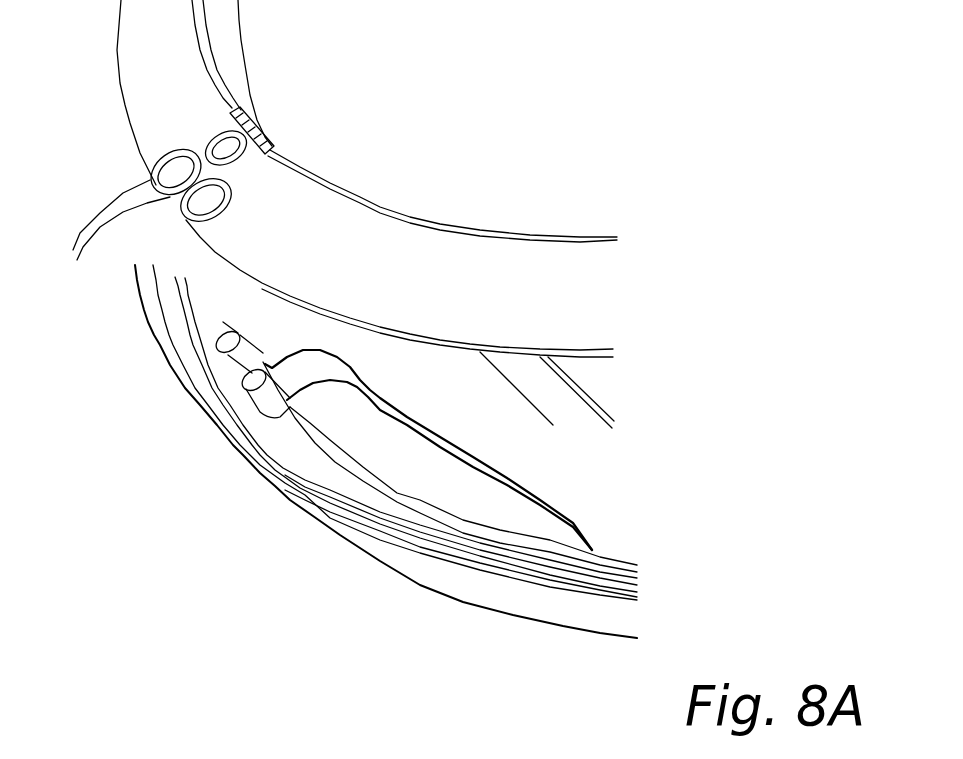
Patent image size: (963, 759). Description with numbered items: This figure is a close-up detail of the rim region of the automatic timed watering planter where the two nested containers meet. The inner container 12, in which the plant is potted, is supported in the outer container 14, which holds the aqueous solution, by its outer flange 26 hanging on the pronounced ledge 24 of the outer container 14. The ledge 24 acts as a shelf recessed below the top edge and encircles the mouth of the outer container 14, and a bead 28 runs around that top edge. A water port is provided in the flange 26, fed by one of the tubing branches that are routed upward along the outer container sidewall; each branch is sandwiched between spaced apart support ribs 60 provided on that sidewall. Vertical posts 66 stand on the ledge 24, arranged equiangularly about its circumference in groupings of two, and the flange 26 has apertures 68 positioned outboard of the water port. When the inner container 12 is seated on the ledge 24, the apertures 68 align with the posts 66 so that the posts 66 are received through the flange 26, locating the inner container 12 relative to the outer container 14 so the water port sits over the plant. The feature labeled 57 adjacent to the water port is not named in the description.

The inner container 12 is at (250, 91).
The outer container 14 is at (412, 548).
The ledge 24 is at (262, 482).
The outer flange 26 is at (288, 240).
The bead 28 is at (207, 420).
The connector 57 is at (211, 137).
The support ribs 60 is at (517, 496).
The vertical posts 66 is at (247, 402).
The apertures 68 is at (141, 220).